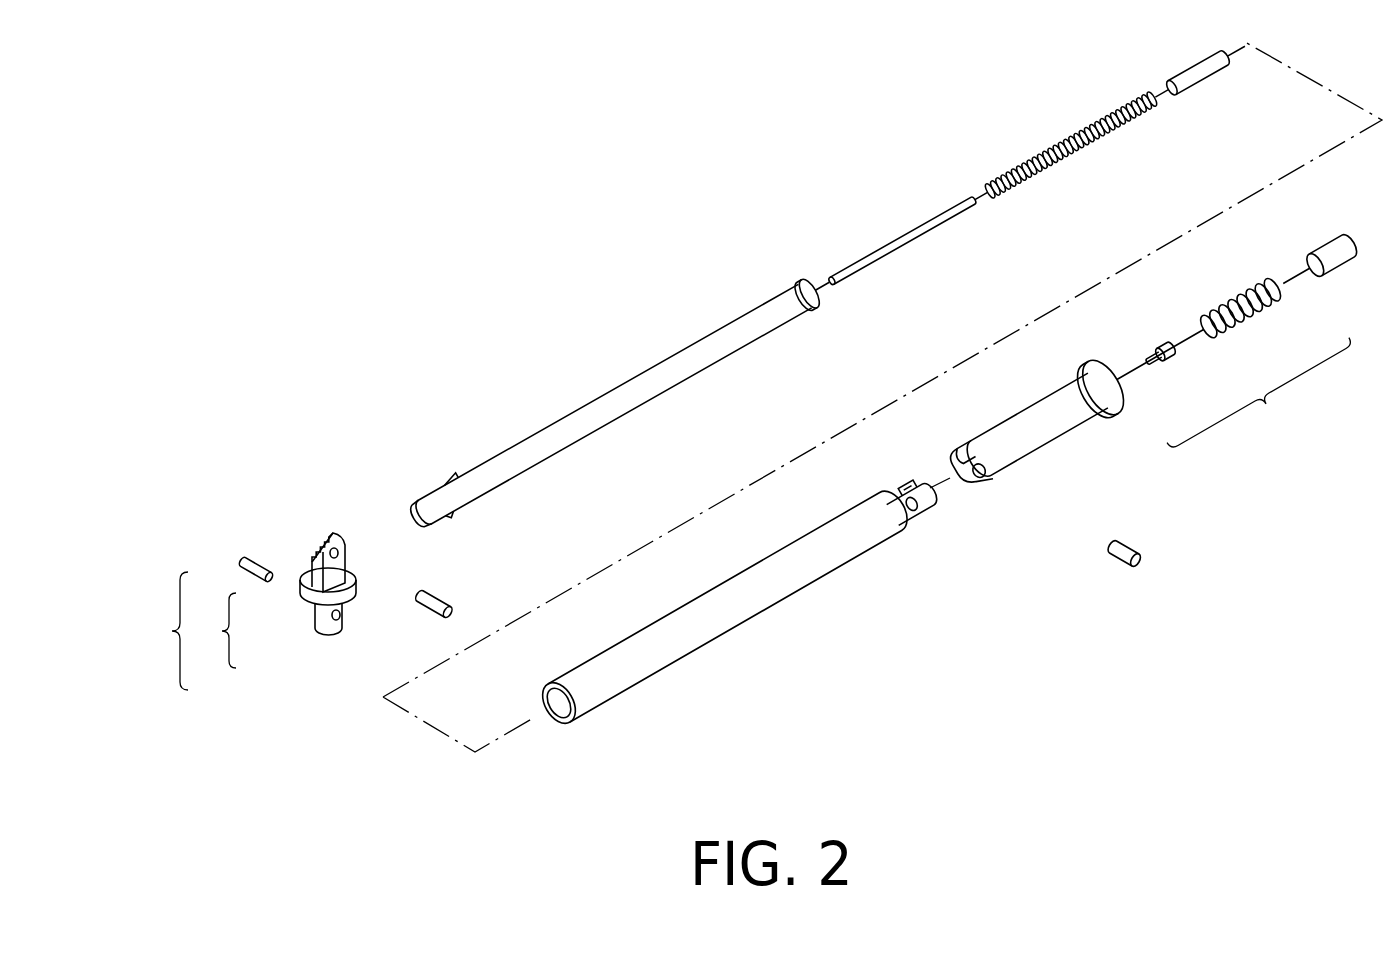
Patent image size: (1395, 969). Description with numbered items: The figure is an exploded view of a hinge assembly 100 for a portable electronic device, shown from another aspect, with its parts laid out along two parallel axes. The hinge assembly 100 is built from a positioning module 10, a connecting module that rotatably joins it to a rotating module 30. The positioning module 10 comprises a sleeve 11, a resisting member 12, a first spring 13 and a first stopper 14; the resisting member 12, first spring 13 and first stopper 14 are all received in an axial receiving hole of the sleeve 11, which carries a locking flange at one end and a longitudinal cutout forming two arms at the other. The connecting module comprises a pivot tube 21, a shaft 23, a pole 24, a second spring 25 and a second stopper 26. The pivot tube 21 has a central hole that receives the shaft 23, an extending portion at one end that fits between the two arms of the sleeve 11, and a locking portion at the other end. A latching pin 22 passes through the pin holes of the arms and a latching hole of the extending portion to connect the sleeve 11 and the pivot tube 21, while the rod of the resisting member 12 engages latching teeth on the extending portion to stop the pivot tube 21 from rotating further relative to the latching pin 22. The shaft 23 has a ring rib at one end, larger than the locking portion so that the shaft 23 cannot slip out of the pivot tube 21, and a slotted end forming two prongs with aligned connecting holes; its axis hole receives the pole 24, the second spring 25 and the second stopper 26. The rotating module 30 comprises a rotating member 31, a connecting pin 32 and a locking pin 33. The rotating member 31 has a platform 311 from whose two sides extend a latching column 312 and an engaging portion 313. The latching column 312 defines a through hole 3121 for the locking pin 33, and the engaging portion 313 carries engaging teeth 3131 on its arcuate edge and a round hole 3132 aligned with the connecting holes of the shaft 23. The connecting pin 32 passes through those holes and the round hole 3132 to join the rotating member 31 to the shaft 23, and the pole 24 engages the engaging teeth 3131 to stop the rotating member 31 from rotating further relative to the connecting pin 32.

The hinge assembly 100 is at (579, 184).
The positioning module 10 is at (1145, 386).
The sleeve 11 is at (1090, 397).
The resisting member 12 is at (1180, 354).
The first spring 13 is at (1252, 322).
The first stopper 14 is at (1318, 263).
The pivot tube 21 is at (650, 652).
The latching pin 22 is at (1112, 550).
The shaft 23 is at (637, 393).
The pole 24 is at (960, 206).
The second spring 25 is at (1087, 136).
The second stopper 26 is at (1185, 79).
The rotating module 30 is at (296, 581).
The rotating member 31 is at (313, 569).
The platform 311 is at (320, 600).
The latching column 312 is at (333, 613).
The through hole 3121 is at (340, 613).
The engaging portion 313 is at (320, 543).
The engaging teeth 3131 is at (328, 536).
The round hole 3132 is at (338, 551).
The connecting pin 32 is at (248, 572).
The locking pin 33 is at (432, 612).